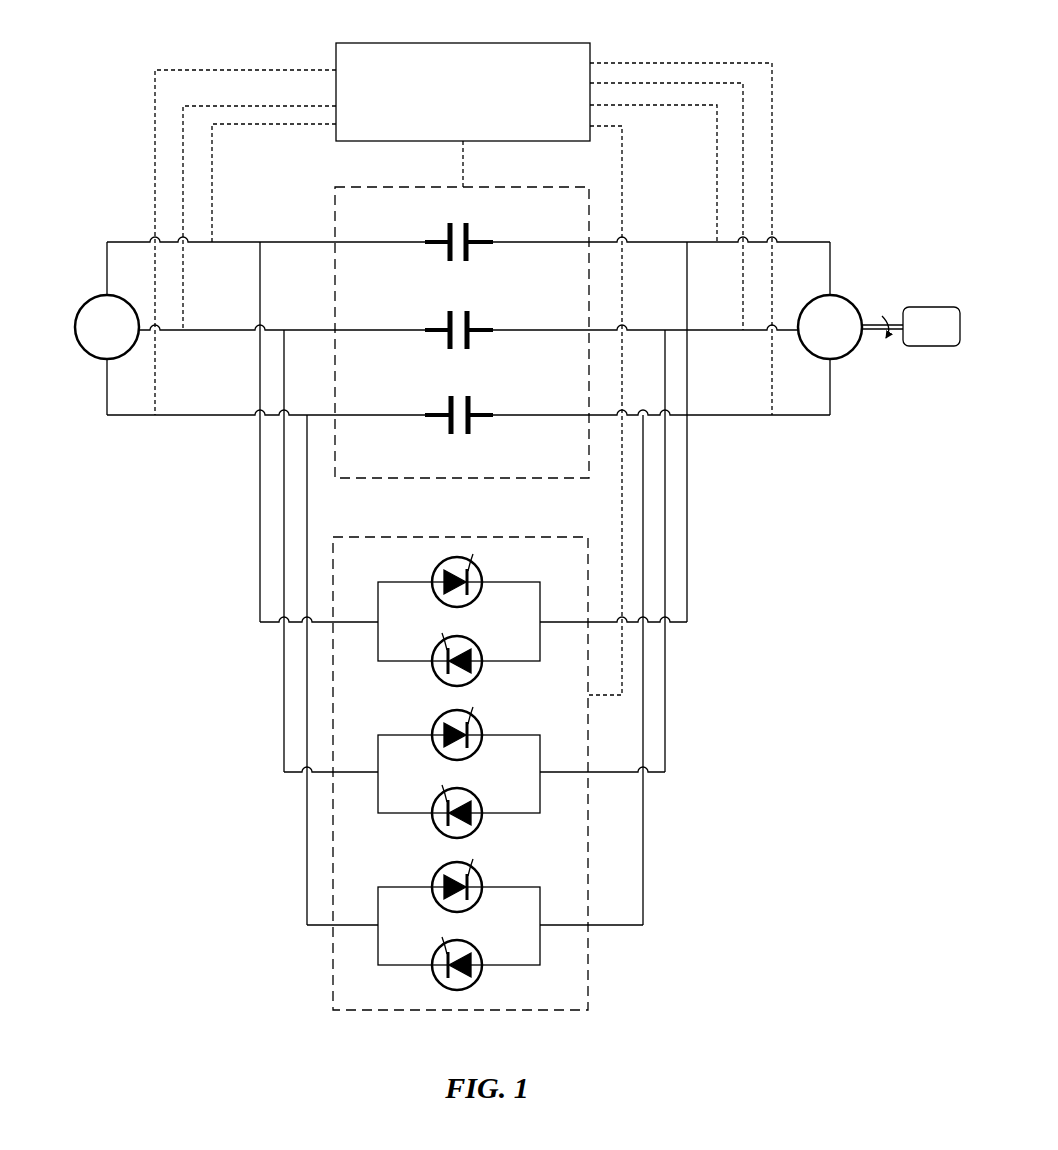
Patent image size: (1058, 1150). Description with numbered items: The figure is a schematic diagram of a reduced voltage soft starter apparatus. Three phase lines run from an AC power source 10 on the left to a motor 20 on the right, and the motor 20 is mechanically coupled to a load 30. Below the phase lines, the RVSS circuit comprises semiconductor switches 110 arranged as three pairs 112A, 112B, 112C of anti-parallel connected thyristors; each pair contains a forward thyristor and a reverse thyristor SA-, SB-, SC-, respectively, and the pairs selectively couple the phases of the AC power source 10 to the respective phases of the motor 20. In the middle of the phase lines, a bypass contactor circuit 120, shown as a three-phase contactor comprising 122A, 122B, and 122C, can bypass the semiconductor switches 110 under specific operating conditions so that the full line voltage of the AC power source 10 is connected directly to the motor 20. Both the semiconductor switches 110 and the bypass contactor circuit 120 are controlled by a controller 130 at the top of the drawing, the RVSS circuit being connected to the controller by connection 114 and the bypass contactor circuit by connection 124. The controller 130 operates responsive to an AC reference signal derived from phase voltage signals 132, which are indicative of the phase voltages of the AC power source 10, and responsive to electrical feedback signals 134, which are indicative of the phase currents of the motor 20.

The AC power source 10 is at (76, 326).
The motor 20 is at (843, 356).
The load 30 is at (957, 350).
The semiconductor switches 110 is at (398, 534).
The pair of anti-parallel connected thyristors 112A is at (443, 631).
The pair of anti-parallel connected thyristors 112B is at (444, 783).
The pair of anti-parallel connected thyristors 112C is at (445, 933).
The connection 114 is at (630, 175).
The bypass contactor circuit 120 is at (343, 185).
The contactor 122A is at (456, 220).
The contactor 122B is at (456, 308).
The contactor 122C is at (455, 391).
The connection 124 is at (488, 153).
The controller 130 is at (470, 43).
The phase voltage signals 132 is at (235, 58).
The electrical feedback signals 134 is at (788, 150).
The thyristor SA- is at (494, 674).
The thyristor SB- is at (494, 826).
The thyristor SC- is at (494, 976).